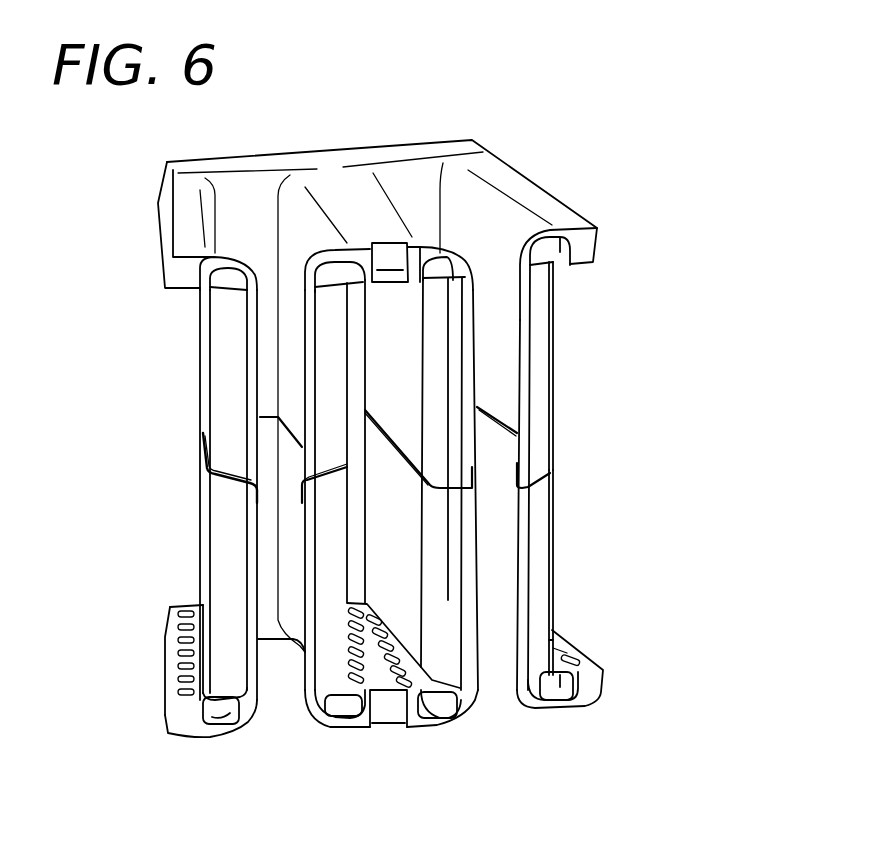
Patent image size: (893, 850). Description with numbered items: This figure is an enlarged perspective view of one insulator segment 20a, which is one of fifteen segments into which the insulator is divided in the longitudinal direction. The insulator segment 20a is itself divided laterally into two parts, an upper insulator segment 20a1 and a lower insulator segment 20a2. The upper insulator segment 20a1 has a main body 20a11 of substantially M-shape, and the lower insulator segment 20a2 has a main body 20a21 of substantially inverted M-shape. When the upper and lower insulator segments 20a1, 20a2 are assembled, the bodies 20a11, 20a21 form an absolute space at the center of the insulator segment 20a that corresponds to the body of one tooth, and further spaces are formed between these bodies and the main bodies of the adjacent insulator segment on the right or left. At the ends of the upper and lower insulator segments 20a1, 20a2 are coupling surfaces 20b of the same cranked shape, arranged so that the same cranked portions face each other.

The insulator segment 20a is at (625, 468).
The upper insulator segment 20a1 is at (553, 430).
The lower insulator segment 20a2 is at (553, 519).
The main body of upper insulator segment 20a11 is at (555, 318).
The main body of lower insulator segment 20a21 is at (550, 583).
The coupling surface 20b is at (198, 443).